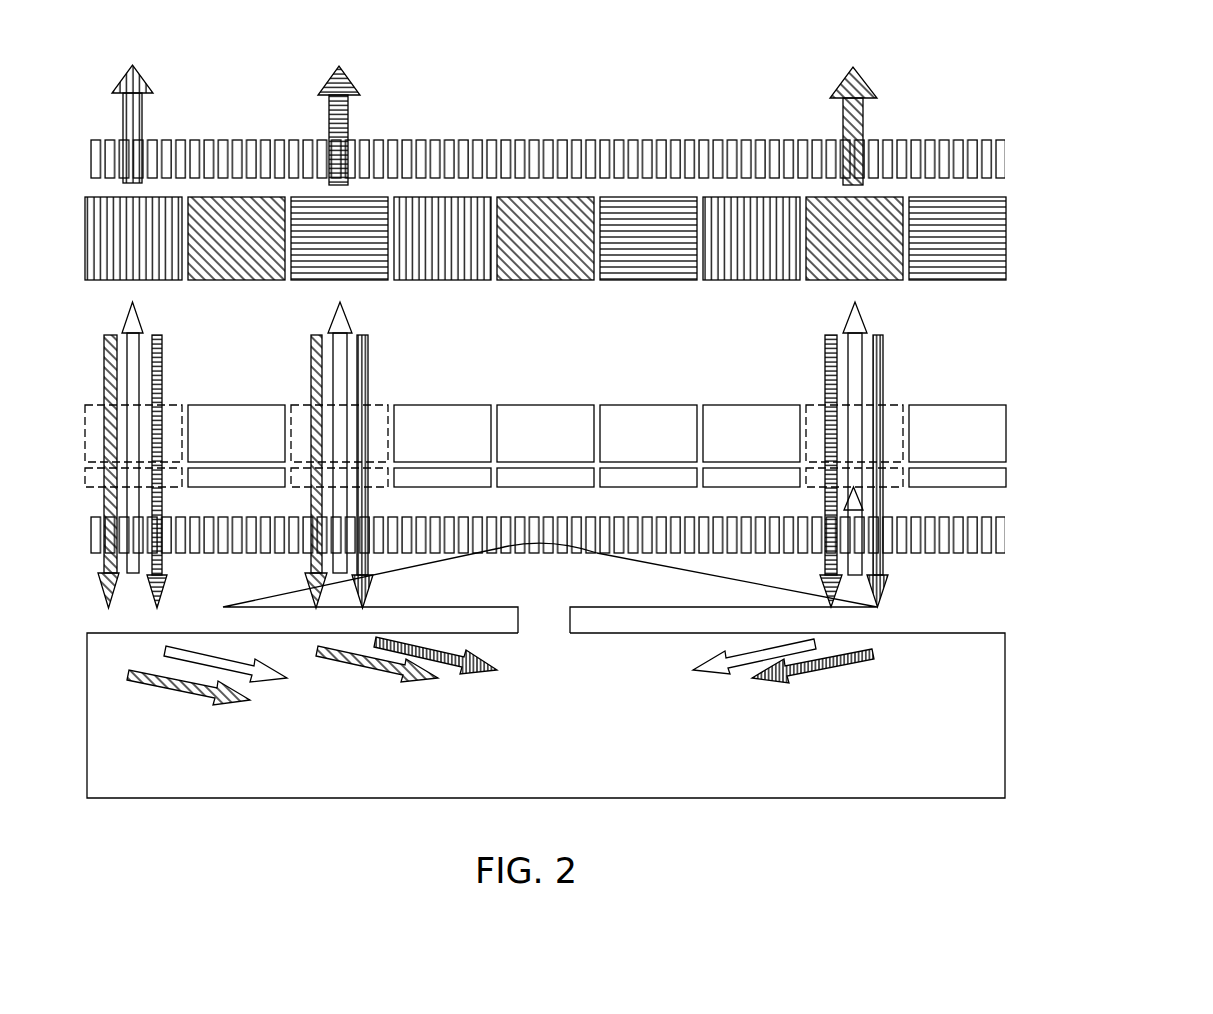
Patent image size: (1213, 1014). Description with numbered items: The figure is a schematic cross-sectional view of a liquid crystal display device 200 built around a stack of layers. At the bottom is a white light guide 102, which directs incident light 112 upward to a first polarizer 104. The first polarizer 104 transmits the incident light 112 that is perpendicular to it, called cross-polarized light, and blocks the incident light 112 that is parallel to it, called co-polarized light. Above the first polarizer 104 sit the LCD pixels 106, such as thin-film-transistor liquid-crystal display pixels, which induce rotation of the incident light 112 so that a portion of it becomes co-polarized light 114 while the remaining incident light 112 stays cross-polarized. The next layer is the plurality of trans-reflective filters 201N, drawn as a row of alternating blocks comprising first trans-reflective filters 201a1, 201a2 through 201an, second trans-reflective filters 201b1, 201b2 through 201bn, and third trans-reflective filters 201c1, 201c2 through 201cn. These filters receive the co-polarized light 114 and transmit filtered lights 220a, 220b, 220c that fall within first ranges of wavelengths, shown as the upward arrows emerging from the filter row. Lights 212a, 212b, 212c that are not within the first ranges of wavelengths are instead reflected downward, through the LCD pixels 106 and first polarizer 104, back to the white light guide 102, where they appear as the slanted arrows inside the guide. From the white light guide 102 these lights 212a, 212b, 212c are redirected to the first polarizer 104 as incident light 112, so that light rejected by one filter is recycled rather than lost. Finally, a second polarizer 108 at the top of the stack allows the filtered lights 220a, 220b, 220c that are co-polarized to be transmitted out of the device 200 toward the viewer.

The liquid crystal display device 200 is at (1072, 77).
The white light guide 102 is at (1005, 748).
The first polarizer 104 is at (1005, 533).
The LCD pixels 106 is at (1005, 438).
The second polarizer 108 is at (1007, 157).
The incident light 112 is at (857, 507).
The co-polarized light 114 is at (852, 353).
The plurality of trans-reflective filters 201N is at (1072, 257).
The first trans-reflective filter 201a1 is at (108, 281).
The second trans-reflective filter 201b1 is at (202, 281).
The third trans-reflective filter 201c1 is at (347, 281).
The first trans-reflective filter 201a2 is at (467, 281).
The second trans-reflective filter 201b2 is at (550, 281).
The third trans-reflective filter 201c2 is at (650, 281).
The first trans-reflective filter 201an is at (768, 281).
The second trans-reflective filter 201bn is at (868, 281).
The third trans-reflective filter 201cn is at (983, 281).
The reflected light 212a is at (368, 387).
The reflected light 212b is at (105, 390).
The reflected light 212c is at (162, 347).
The filtered light 220a is at (153, 92).
The filtered light 220b is at (871, 95).
The filtered light 220c is at (360, 95).